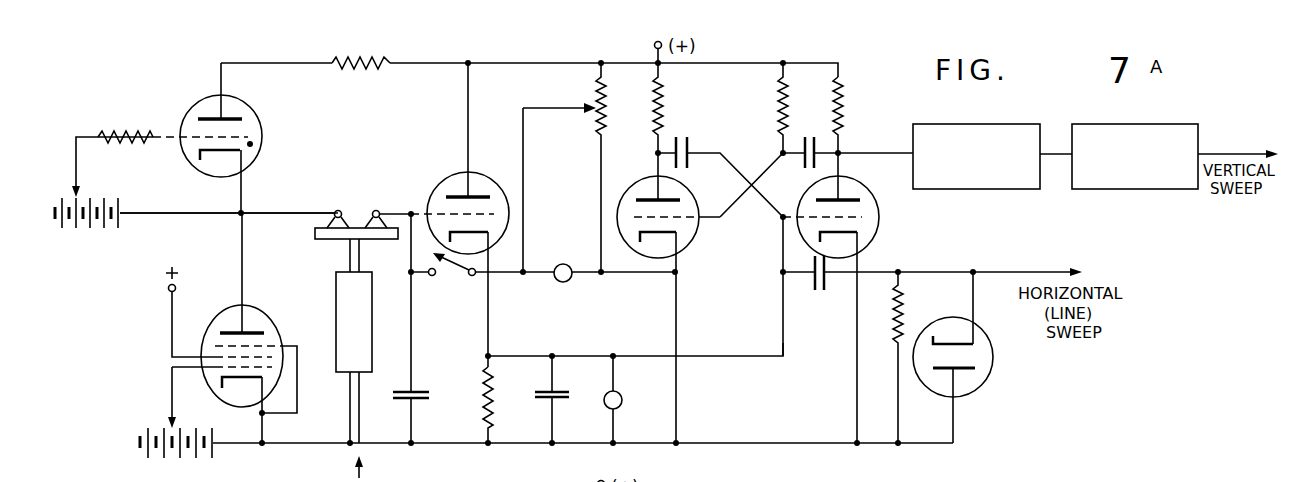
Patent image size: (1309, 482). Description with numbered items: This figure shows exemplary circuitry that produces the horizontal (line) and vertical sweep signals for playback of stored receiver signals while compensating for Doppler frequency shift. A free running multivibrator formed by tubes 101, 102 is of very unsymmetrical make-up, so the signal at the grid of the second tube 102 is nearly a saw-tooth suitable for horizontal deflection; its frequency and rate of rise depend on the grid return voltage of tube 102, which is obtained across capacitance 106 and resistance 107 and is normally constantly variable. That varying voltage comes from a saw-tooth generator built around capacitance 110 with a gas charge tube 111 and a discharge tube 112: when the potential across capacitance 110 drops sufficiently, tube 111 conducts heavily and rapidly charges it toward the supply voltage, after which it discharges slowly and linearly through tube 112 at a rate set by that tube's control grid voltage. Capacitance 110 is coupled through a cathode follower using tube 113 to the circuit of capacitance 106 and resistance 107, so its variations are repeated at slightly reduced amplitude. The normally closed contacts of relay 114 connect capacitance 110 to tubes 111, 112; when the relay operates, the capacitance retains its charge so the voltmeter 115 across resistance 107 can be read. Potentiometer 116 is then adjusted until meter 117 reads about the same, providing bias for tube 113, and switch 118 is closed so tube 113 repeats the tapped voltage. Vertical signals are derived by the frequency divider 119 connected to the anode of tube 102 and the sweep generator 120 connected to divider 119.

The multivibrator tube 101 is at (628, 194).
The multivibrator tube 102 is at (869, 196).
The capacitance 106 is at (569, 395).
The resistance 107 is at (494, 397).
The capacitance 110 is at (429, 396).
The charge tube 111 is at (253, 117).
The discharge tube 112 is at (276, 318).
The cathode follower tube 113 is at (438, 194).
The relay 114 is at (373, 341).
The voltmeter 115 is at (622, 398).
The potentiometer 116 is at (604, 112).
The meter 117 is at (563, 263).
The switch 118 is at (450, 270).
The frequency divider 119 is at (955, 124).
The sweep generator 120 is at (1115, 124).